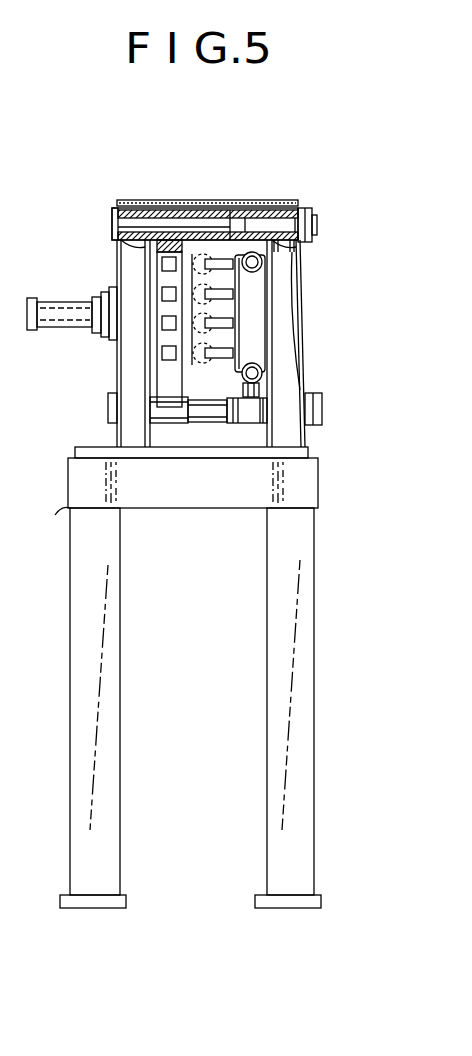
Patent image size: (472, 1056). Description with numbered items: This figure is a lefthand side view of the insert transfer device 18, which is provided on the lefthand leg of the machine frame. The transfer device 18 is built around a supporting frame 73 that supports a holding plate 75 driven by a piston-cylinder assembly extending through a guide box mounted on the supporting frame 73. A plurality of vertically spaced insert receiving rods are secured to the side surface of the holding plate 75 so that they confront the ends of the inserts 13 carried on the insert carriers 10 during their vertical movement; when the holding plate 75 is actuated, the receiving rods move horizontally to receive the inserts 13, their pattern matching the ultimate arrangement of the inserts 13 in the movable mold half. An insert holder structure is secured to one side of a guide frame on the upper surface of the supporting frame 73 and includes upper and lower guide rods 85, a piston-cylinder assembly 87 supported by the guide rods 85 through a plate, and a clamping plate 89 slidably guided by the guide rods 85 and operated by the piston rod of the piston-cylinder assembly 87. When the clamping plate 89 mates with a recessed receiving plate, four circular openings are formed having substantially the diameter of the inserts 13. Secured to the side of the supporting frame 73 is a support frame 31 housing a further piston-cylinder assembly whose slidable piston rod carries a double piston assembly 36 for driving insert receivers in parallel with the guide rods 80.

The insert carrier 10 is at (196, 364).
The insert 13 is at (212, 258).
The insert transfer device 18 is at (375, 578).
The support frame 31 is at (120, 247).
The double piston assembly 36 is at (162, 263).
The supporting frame 73 is at (314, 658).
The holding plate 75 is at (250, 318).
The guide rods 80 is at (263, 262).
The upper and lower guide rods 85 is at (197, 222).
The piston-cylinder assembly 87 is at (53, 305).
The clamping plate 89 is at (168, 368).